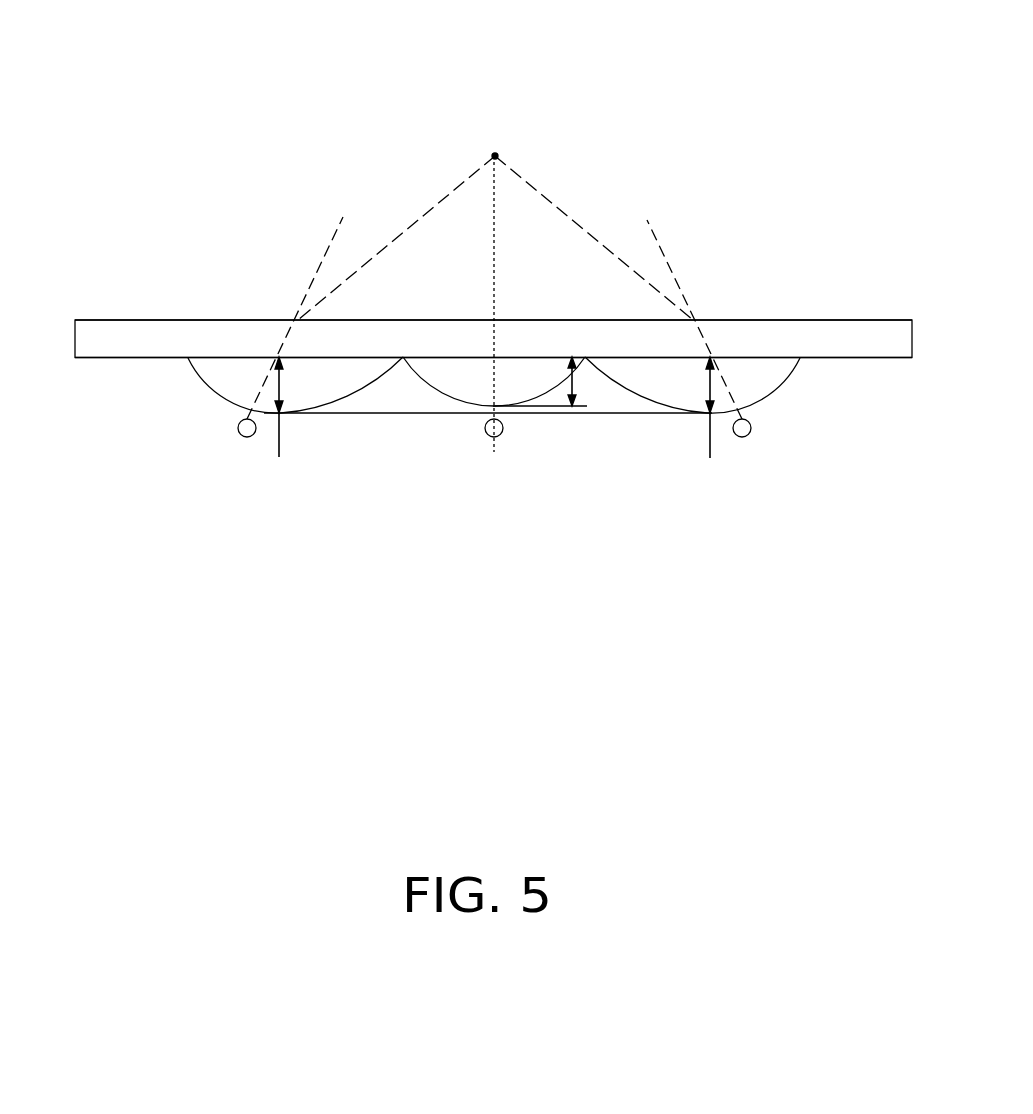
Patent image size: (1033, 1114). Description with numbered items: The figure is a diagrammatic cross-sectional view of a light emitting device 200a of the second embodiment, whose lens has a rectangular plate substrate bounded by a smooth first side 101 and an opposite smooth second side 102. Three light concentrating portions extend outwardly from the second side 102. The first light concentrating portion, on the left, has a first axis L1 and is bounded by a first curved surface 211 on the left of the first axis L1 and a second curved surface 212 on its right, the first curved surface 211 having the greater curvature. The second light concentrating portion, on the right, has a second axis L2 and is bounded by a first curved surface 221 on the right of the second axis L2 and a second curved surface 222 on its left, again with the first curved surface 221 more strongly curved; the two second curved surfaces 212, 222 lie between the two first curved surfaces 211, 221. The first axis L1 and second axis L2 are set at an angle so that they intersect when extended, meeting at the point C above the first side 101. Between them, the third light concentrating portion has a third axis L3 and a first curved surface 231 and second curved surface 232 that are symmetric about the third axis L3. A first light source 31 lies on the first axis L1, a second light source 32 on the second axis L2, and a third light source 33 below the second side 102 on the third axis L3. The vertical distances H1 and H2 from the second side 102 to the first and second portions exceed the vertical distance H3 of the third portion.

The light emitting device 200a is at (439, 58).
The first side 101 is at (103, 320).
The second side 102 is at (99, 359).
The first curved surface 211 is at (237, 406).
The second curved surface 212 is at (347, 398).
The first curved surface 221 is at (777, 395).
The second curved surface 222 is at (660, 403).
The first curved surface 231 is at (448, 398).
The second curved surface 232 is at (551, 398).
The first light source 31 is at (246, 437).
The second light source 32 is at (748, 437).
The third light source 33 is at (500, 434).
The convergence point C is at (495, 220).
The first axis L1 is at (295, 318).
The second axis L2 is at (694, 319).
The third axis L3 is at (516, 304).
The vertical distance H1 is at (297, 409).
The vertical distance H2 is at (693, 409).
The vertical distance H3 is at (552, 381).